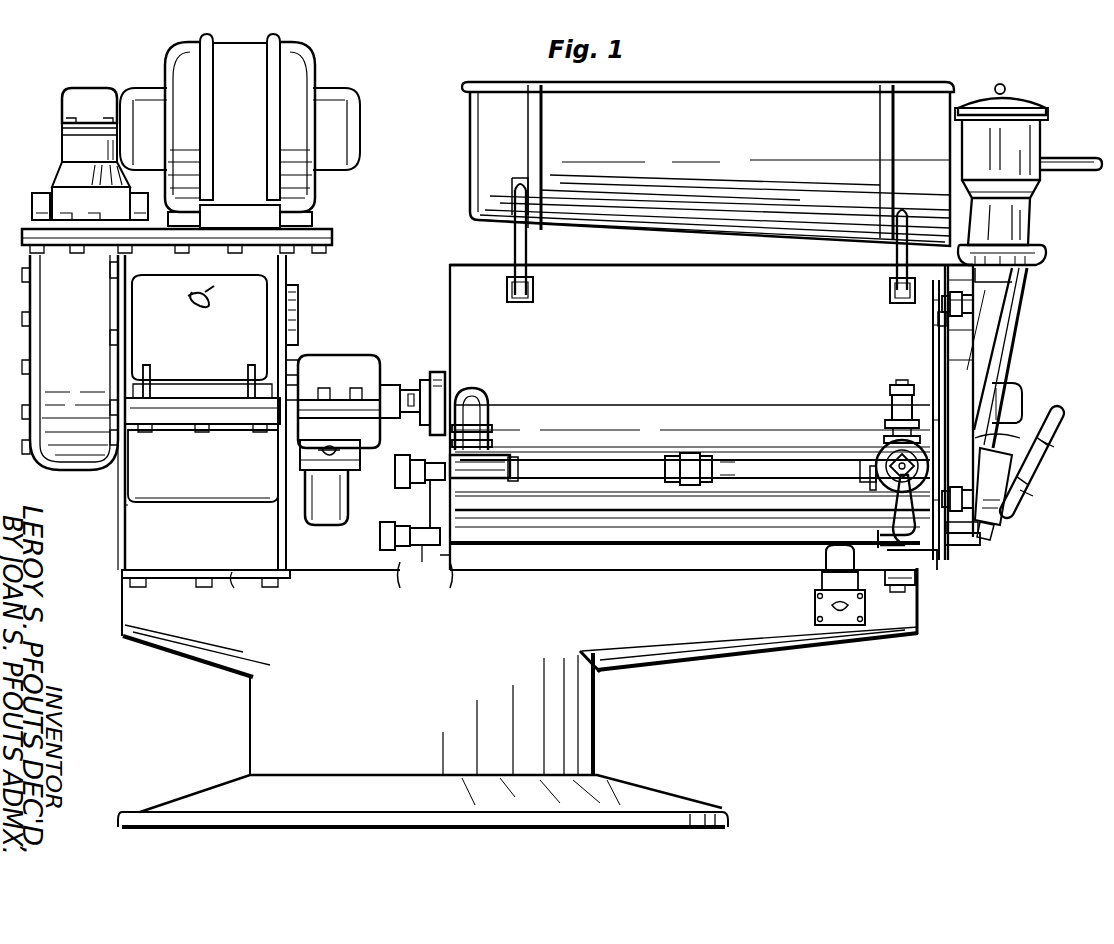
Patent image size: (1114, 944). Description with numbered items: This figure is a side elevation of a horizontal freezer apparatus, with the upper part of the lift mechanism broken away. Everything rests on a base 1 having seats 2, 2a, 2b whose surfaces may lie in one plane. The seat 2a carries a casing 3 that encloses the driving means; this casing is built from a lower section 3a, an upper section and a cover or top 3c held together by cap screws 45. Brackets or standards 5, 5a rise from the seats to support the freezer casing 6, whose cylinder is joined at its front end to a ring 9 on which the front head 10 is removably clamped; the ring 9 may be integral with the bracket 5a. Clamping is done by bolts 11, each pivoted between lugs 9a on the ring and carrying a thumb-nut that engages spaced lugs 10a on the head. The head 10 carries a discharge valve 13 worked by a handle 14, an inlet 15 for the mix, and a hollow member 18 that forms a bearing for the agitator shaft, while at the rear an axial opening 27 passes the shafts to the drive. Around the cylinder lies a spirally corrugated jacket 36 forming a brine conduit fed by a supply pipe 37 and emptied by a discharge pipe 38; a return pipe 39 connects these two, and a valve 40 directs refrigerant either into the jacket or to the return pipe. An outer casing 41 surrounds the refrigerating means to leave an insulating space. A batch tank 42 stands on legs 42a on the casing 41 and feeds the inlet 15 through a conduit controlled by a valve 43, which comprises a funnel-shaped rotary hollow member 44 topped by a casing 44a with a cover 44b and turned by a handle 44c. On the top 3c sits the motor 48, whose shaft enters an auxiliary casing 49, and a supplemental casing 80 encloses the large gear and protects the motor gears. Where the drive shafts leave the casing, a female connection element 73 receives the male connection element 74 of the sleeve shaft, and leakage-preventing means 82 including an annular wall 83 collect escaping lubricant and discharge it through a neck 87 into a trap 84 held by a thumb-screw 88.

The base 1 is at (597, 717).
The seat 2 is at (233, 586).
The seat 2a is at (441, 580).
The seat 2b is at (885, 575).
The casing 3 is at (202, 412).
The lower section 3a is at (126, 506).
The cover or top 3c is at (330, 236).
The bracket or standard 5 is at (436, 561).
The bracket or standard 5a is at (922, 572).
The freezer casing 6 is at (711, 417).
The ring 9 is at (938, 478).
The lugs 9a is at (936, 318).
The front head 10 is at (985, 364).
The lugs 10a is at (962, 536).
The bolts 11 is at (975, 304).
The valve 13 is at (1022, 476).
The handle 14 is at (1040, 440).
The inlet 15 is at (1024, 290).
The hollow member 18 is at (1012, 398).
The axial opening 27 is at (444, 378).
The jacket 36 is at (288, 300).
The supply pipe 37 is at (708, 533).
The discharge pipe 38 is at (485, 408).
The return pipe 39 is at (745, 470).
The valve 40 is at (882, 456).
The casing 41 is at (708, 272).
The batch tank 42 is at (708, 164).
The legs 42a is at (527, 254).
The valve 43 is at (1022, 238).
The rotary hollow member 44 is at (1020, 192).
The casing 44a is at (1022, 156).
The cover 44b is at (1028, 104).
The handle 44c is at (1071, 175).
The cap screws 45 is at (190, 440).
The motor 48 is at (298, 96).
The auxiliary casing 49 is at (72, 150).
The female connection element 73 is at (386, 392).
The male connection element 74 is at (396, 400).
The supplemental casing 80 is at (78, 462).
The lubricant leakage preventing means 82 is at (301, 368).
The annular wall 83 is at (341, 362).
The trap 84 is at (380, 505).
The neck 87 is at (352, 470).
The thumb-screw 88 is at (325, 476).